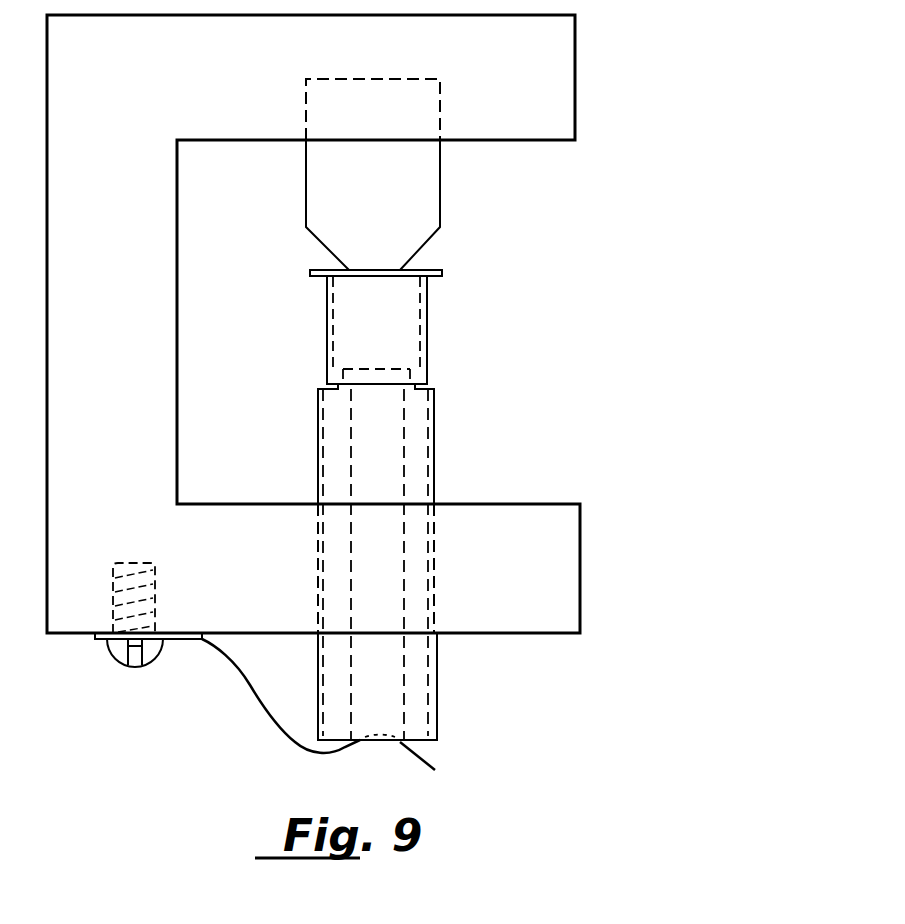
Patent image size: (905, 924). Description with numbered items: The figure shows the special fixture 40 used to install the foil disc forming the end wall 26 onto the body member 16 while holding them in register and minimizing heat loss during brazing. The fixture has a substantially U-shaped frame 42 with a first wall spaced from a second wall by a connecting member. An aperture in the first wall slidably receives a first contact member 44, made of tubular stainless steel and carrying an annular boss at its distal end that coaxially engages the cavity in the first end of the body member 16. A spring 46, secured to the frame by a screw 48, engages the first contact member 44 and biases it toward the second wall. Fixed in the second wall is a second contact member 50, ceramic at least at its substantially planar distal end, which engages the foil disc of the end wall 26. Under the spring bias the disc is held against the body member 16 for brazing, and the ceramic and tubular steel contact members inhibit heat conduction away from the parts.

The fixture 40 is at (532, 220).
The U-shaped frame 42 is at (575, 77).
The second contact member 50 is at (440, 190).
The end wall 26 is at (442, 270).
The body member 16 is at (427, 330).
The first contact member 44 is at (434, 452).
The spring 46 is at (430, 757).
The screw 48 is at (115, 650).